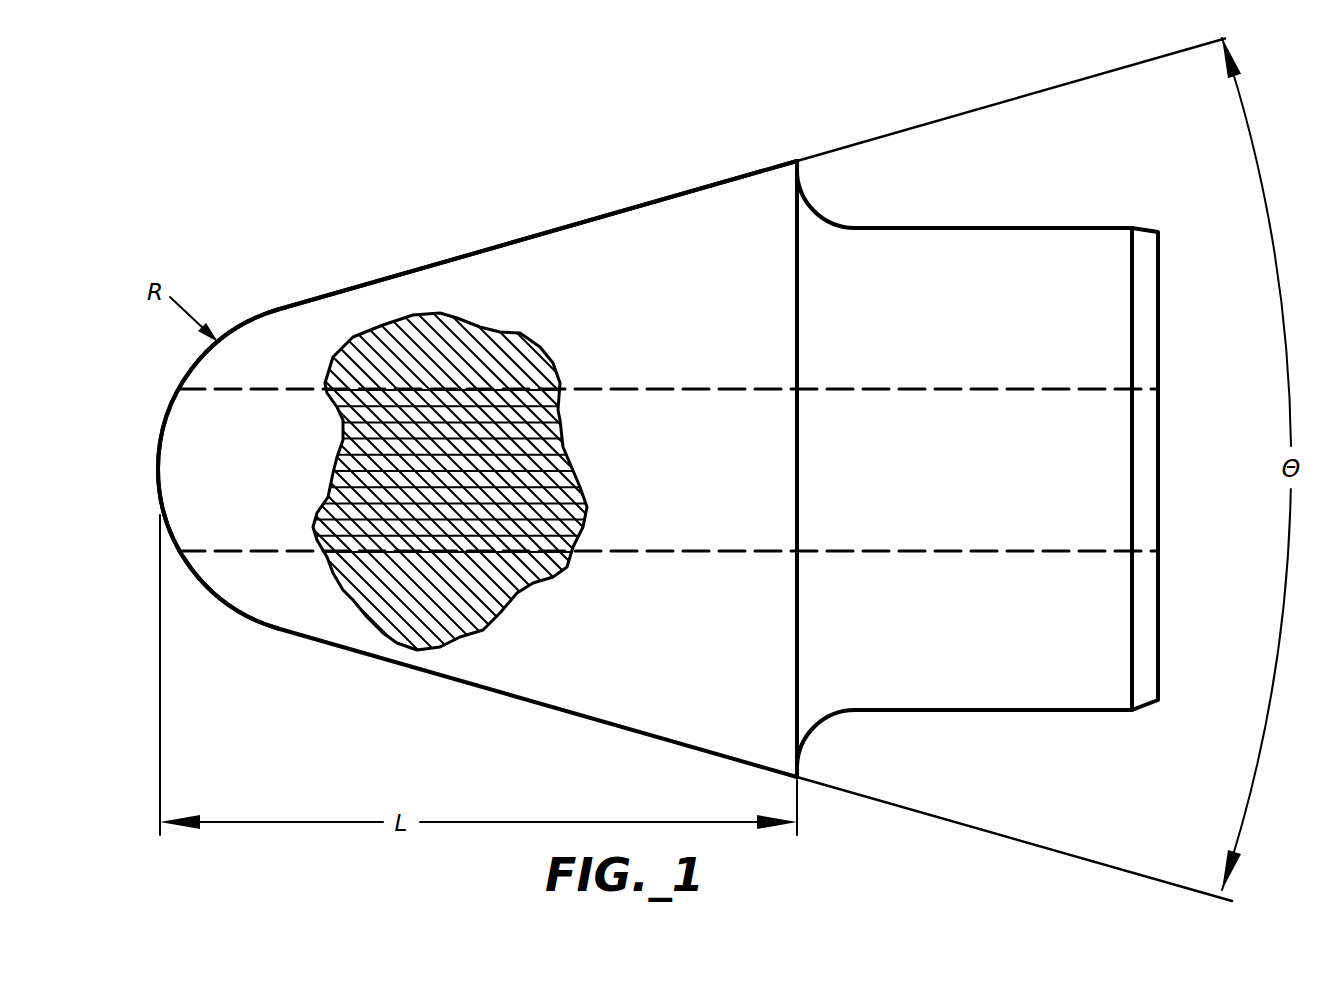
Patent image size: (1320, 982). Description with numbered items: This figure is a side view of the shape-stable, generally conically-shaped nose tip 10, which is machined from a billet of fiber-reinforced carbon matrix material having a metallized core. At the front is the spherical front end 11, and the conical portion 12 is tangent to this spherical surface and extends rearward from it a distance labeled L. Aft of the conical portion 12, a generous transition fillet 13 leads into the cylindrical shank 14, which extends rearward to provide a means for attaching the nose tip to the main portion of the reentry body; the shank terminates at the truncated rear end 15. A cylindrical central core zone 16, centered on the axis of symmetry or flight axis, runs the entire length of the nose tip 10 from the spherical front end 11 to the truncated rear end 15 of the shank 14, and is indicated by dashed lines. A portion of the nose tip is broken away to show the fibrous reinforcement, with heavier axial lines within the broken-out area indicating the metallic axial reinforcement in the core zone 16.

The nose tip 10 is at (325, 682).
The spherical front end 11 is at (185, 378).
The conical portion 12 is at (446, 257).
The transition fillet 13 is at (823, 213).
The cylindrical shank 14 is at (1008, 226).
The truncated rear end 15 is at (1163, 340).
The cylindrical central core zone 16 is at (508, 428).